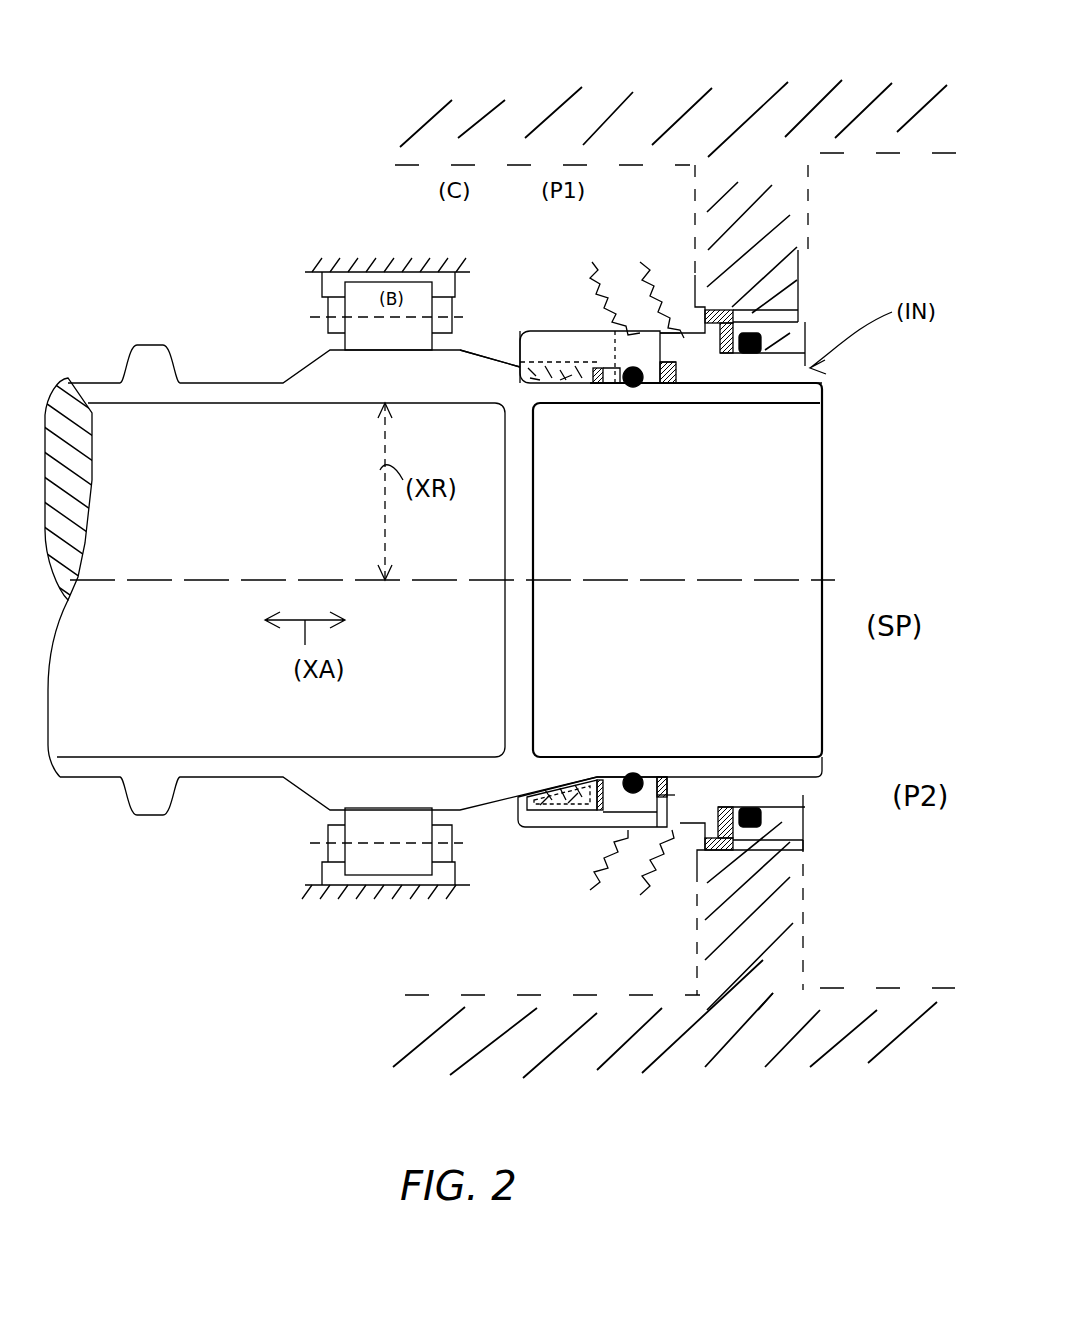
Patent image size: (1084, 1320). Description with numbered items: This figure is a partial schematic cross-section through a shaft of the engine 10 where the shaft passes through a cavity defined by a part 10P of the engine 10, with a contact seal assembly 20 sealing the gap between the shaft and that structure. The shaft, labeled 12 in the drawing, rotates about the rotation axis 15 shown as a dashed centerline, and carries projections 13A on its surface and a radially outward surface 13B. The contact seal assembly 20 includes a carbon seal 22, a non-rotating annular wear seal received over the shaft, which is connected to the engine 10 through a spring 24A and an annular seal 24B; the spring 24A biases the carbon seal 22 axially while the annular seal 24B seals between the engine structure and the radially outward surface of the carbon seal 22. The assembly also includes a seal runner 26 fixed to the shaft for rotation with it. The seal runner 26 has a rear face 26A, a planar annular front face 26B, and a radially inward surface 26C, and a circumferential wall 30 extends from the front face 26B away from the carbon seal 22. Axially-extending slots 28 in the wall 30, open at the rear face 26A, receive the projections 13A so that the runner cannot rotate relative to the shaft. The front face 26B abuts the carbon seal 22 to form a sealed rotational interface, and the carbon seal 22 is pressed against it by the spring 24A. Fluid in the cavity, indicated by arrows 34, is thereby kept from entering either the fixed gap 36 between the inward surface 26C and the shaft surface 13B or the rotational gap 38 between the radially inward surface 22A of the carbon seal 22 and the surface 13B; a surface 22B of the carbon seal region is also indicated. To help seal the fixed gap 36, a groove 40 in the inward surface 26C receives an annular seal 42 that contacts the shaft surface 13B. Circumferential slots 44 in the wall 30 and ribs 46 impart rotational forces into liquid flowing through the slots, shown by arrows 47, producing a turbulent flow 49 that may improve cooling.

The engine/machine 10 is at (676, 555).
The part of the engine 10P is at (788, 168).
The shaft 12 is at (316, 503).
The parts of the shaft 13A is at (505, 400).
The radially outward surface of the shaft 13B is at (655, 382).
The rotation axis 15 is at (148, 580).
The contact seal assembly 20 is at (680, 312).
The carbon seal 22 is at (706, 370).
The radially inward surface of the carbon seal 22A is at (755, 392).
The seal runner flange 22B is at (793, 386).
The spring 24A is at (755, 338).
The annular seal 24B is at (768, 356).
The seal runner 26 is at (580, 333).
The rear face of the seal runner 26A is at (518, 355).
The front face of the seal runner 26B is at (675, 386).
The radially inward surface of the seal runner 26C is at (600, 388).
The axially-extending slots 28 is at (572, 368).
The circumferential wall 30 is at (540, 365).
The arrows 34 is at (625, 868).
The fixed gap 36 is at (634, 392).
The rotational gap 38 is at (748, 392).
The groove 40 is at (595, 332).
The annular seal 42 is at (606, 388).
The circumferential slots 44 is at (552, 815).
The ribs 46 is at (560, 802).
The arrows 47 is at (568, 830).
The turbulent flow 49 is at (633, 772).